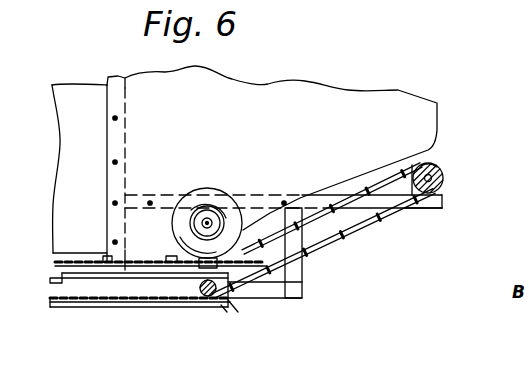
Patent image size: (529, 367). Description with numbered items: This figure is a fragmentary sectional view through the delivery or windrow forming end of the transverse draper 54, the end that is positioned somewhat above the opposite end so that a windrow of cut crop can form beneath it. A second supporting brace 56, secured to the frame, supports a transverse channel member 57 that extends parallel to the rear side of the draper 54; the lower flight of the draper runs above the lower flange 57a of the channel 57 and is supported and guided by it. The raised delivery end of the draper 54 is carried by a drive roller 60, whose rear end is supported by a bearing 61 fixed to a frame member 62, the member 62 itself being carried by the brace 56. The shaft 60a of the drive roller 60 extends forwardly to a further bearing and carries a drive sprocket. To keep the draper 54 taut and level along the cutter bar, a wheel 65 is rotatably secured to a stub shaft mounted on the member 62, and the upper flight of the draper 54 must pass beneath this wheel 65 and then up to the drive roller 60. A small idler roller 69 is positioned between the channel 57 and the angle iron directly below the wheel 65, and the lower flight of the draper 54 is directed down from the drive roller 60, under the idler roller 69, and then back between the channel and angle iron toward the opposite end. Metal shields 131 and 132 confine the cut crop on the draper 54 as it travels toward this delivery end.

The transverse draper 54 is at (308, 249).
The second supporting brace 56 is at (117, 79).
The transverse channel member 57 is at (60, 281).
The lower flange of the channel 57a is at (103, 306).
The drive roller 60 is at (443, 179).
The shaft of the drive roller 60a is at (432, 164).
The bearing 61 is at (443, 198).
The frame member 62 is at (427, 209).
The wheel 65 is at (216, 191).
The small idler roller 69 is at (208, 300).
The metal shield 131 is at (86, 172).
The metal shield 132 is at (228, 145).